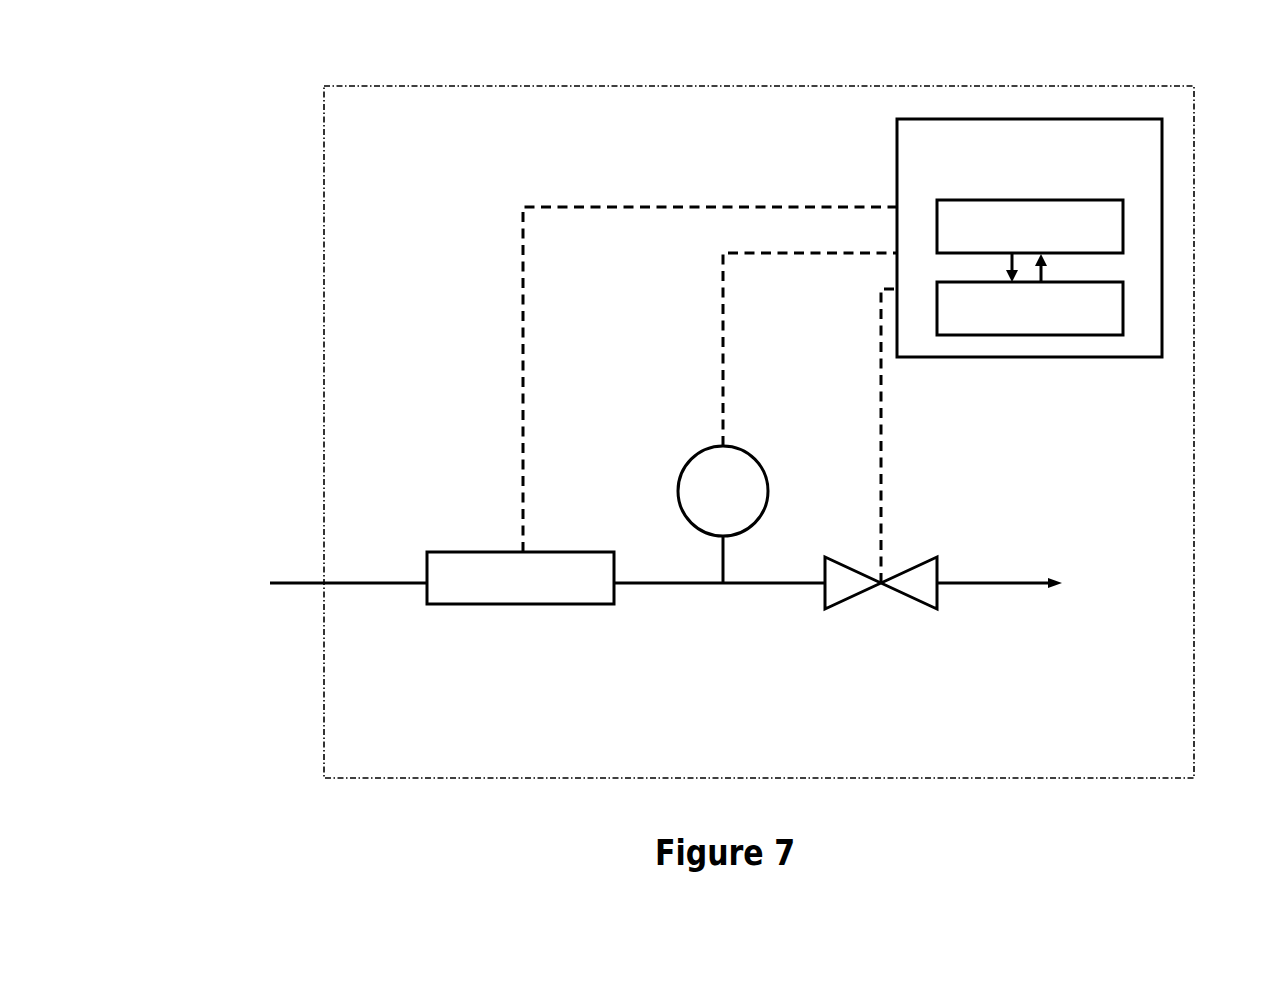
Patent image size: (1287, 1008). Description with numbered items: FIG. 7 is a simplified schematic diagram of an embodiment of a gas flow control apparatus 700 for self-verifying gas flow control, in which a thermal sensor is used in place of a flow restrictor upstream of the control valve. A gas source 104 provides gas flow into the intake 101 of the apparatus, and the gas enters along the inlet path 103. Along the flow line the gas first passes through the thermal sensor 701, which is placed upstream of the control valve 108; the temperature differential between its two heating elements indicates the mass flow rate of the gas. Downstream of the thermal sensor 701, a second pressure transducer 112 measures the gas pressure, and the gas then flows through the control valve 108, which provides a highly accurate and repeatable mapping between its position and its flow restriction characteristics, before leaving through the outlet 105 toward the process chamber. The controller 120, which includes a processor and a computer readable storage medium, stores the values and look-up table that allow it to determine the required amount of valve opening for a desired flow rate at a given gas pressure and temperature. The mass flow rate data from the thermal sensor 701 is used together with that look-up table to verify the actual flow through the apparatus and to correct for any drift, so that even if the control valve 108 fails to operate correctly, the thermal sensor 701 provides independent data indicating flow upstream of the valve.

The gas flow control apparatus 700 is at (442, 178).
The controller 120 is at (1092, 365).
The gas inlet 103 is at (301, 576).
The gas source 104 is at (223, 606).
The intake 101 is at (323, 590).
The outlet to process chamber 105 is at (1053, 573).
The thermal sensor 701 is at (662, 478).
The second pressure transducer 112 is at (761, 503).
The control valve 108 is at (881, 521).